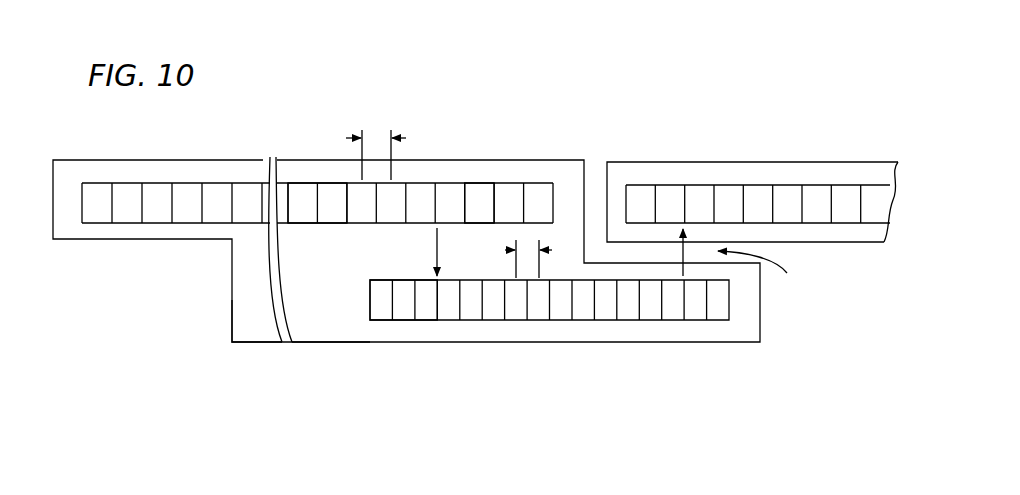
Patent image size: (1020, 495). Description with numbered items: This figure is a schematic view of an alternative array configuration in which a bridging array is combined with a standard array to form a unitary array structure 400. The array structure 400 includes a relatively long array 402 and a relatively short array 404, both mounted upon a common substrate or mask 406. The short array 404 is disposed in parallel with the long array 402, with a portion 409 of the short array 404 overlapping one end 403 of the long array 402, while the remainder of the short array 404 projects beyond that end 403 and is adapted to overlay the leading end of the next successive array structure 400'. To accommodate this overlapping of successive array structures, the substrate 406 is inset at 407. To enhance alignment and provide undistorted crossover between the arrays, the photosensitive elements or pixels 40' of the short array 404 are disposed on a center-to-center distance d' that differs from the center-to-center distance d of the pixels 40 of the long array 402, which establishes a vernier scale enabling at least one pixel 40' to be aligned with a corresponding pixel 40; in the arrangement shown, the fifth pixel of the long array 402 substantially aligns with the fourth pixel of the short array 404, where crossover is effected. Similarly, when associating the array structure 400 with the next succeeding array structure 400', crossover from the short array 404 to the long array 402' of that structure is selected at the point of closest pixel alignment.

The array structure 400 is at (406, 212).
The next successive array structure 400' is at (752, 162).
The long array 402 is at (317, 168).
The long array of next array structure 402' is at (758, 169).
The end of long array 403 is at (490, 183).
The short array 404 is at (676, 327).
The substrate 406 is at (323, 325).
The inset 407 is at (833, 293).
The overlapping portion 409 is at (553, 322).
The pixels 40 is at (313, 222).
The pixels of short array 40' is at (403, 282).
The center-to-center distance d is at (368, 154).
The center-to-center distance of short array pixels d' is at (520, 259).